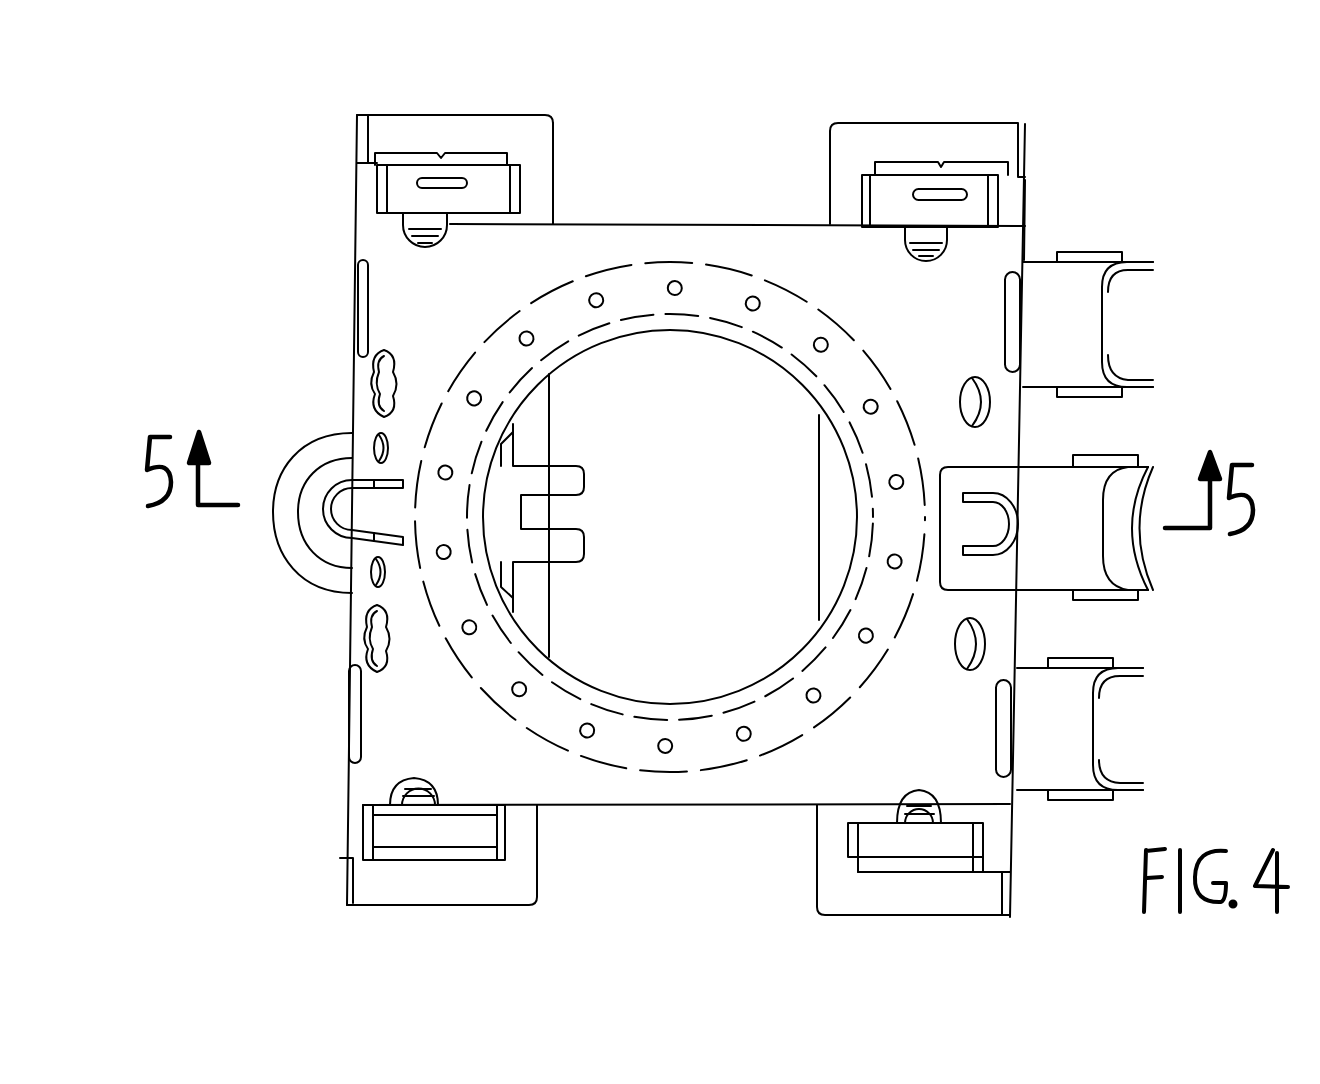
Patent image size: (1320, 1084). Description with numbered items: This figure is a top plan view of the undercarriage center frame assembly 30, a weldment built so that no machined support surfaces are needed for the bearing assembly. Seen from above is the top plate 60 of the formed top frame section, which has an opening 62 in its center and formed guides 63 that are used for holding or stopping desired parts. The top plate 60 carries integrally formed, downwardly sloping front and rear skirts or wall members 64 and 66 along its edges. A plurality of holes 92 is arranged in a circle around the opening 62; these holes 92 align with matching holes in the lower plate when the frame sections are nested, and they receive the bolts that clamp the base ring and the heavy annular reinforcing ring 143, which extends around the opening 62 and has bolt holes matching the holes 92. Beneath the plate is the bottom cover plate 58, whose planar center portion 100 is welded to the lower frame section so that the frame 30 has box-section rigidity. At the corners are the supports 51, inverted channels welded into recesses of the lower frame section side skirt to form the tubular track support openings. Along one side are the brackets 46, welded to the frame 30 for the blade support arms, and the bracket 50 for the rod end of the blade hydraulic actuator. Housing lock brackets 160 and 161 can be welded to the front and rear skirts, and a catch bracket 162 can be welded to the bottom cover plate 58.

The center frame assembly 30 is at (689, 221).
The brackets 46 is at (1047, 294).
The bracket 50 is at (978, 563).
The supports 51 is at (498, 186).
The bottom cover plate 58 is at (819, 445).
The top plate 60 is at (724, 773).
The opening 62 is at (607, 369).
The formed guides 63 is at (563, 476).
The front skirt 64 is at (984, 247).
The rear skirt 66 is at (378, 750).
The holes 92 is at (676, 280).
The planar center portion 100 is at (530, 581).
The reinforcing ring 143 is at (563, 300).
The housing lock bracket 160 is at (326, 526).
The housing lock bracket 161 is at (990, 497).
The catch bracket 162 is at (307, 457).